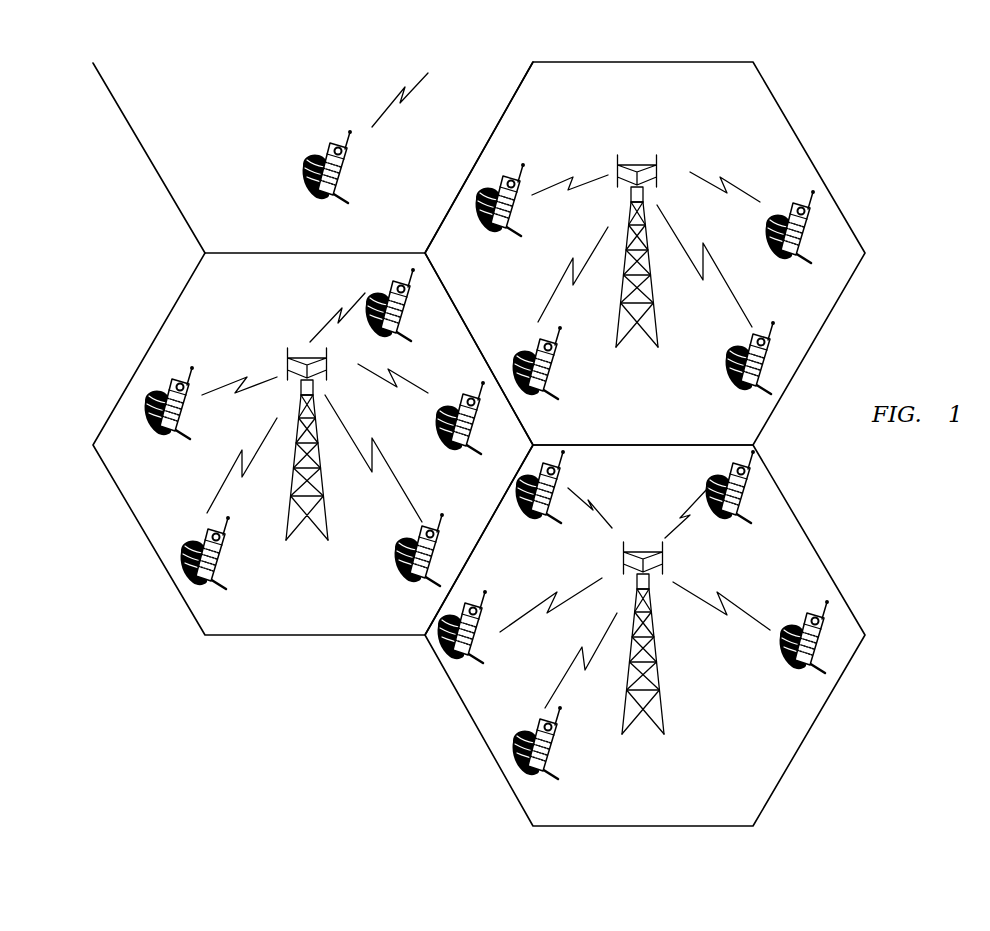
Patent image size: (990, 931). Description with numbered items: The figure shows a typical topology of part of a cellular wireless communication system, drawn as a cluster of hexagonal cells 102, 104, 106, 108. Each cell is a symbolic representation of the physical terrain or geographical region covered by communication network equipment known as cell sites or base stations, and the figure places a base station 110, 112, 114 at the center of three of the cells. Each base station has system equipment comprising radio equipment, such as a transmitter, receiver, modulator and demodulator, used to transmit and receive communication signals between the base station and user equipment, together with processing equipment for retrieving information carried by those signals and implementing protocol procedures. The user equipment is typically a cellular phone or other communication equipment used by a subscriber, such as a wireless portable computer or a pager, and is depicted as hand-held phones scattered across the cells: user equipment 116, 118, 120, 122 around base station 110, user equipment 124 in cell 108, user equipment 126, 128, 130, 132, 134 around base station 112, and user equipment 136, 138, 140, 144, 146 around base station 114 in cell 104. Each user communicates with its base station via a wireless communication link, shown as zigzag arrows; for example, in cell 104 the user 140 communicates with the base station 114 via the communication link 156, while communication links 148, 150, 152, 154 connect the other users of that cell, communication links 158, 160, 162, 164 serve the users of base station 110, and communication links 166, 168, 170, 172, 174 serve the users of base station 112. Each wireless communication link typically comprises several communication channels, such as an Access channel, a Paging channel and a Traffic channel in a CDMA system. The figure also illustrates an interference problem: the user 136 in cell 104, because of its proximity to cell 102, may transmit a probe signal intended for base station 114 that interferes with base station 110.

The cell 102 is at (822, 177).
The cell 104 is at (824, 562).
The cell 106 is at (140, 522).
The cell 108 is at (150, 165).
The base station 110 is at (633, 167).
The base station 112 is at (307, 355).
The base station 114 is at (640, 552).
The user equipment 116 is at (807, 260).
The user equipment 118 is at (760, 390).
The user equipment 120 is at (557, 392).
The user equipment 122 is at (508, 242).
The user equipment 124 is at (308, 175).
The user equipment 126 is at (413, 332).
The user equipment 128 is at (465, 452).
The user equipment 130 is at (428, 588).
The user equipment 132 is at (225, 552).
The user equipment 134 is at (177, 443).
The user 136 is at (740, 525).
The user equipment 138 is at (817, 667).
The user equipment 140 is at (557, 747).
The user equipment 144 is at (480, 653).
The user equipment 146 is at (550, 520).
The communication link 148 is at (743, 615).
The communication link 150 is at (697, 500).
The communication link 152 is at (602, 510).
The communication link 154 is at (553, 618).
The communication link 156 is at (588, 670).
The communication link 158 is at (725, 283).
The communication link 160 is at (732, 183).
The communication link 162 is at (572, 180).
The communication link 164 is at (558, 293).
The communication link 166 is at (418, 388).
The communication link 168 is at (337, 303).
The communication link 170 is at (212, 390).
The communication link 172 is at (225, 482).
The communication link 174 is at (388, 475).